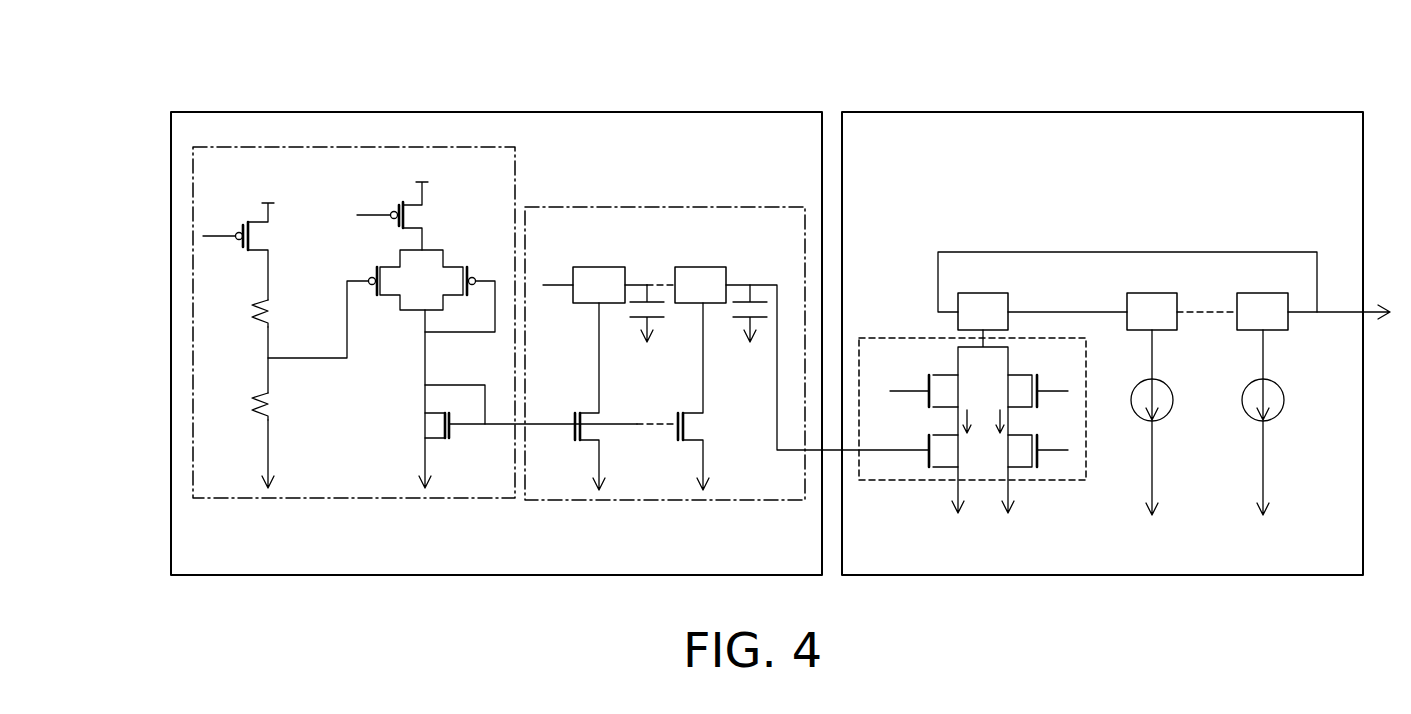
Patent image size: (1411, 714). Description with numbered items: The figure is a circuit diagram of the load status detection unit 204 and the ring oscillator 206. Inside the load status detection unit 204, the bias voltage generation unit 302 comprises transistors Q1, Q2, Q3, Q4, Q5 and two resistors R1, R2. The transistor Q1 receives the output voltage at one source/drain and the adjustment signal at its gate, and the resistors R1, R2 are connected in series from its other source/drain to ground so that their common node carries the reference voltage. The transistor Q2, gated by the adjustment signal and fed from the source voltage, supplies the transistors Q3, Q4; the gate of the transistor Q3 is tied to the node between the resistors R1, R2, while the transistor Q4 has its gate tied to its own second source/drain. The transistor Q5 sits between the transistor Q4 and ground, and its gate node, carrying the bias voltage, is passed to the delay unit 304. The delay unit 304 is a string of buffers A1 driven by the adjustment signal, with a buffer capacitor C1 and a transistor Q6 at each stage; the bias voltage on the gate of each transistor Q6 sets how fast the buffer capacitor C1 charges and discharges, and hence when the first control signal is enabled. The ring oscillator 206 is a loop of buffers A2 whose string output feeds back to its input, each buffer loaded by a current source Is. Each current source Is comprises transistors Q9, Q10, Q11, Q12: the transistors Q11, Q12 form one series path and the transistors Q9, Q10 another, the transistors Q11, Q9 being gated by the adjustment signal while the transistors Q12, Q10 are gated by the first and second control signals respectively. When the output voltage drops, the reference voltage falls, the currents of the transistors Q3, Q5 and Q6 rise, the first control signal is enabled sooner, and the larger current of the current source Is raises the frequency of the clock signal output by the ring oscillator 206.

The load status detection unit 204 is at (527, 112).
The ring oscillator 206 is at (1028, 113).
The bias voltage generation unit 302 is at (193, 182).
The delay unit 304 is at (707, 207).
The buffer A1 is at (613, 267).
The buffer A2 is at (995, 293).
The buffer capacitor C1 is at (698, 313).
The transistor Q1 is at (247, 230).
The transistor Q2 is at (397, 209).
The transistor Q3 is at (416, 280).
The transistor Q4 is at (460, 299).
The transistor Q5 is at (440, 415).
The transistor Q6 is at (654, 396).
The transistor Q9 is at (1050, 384).
The transistor Q10 is at (1055, 453).
The transistor Q11 is at (965, 384).
The transistor Q12 is at (965, 447).
The resistor R1 is at (277, 317).
The resistor R2 is at (277, 410).
The current source Is is at (1060, 482).